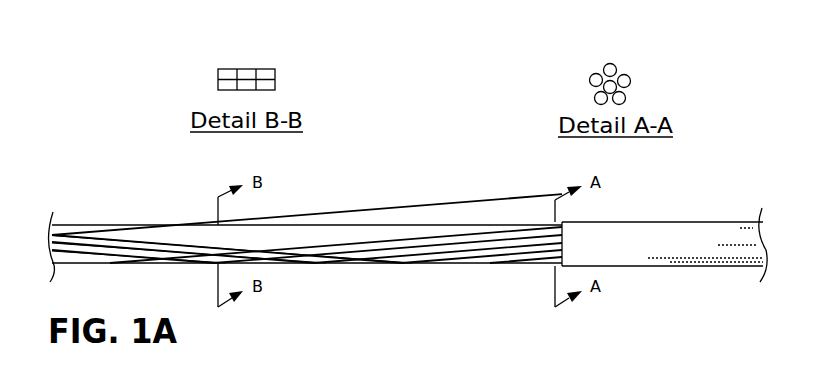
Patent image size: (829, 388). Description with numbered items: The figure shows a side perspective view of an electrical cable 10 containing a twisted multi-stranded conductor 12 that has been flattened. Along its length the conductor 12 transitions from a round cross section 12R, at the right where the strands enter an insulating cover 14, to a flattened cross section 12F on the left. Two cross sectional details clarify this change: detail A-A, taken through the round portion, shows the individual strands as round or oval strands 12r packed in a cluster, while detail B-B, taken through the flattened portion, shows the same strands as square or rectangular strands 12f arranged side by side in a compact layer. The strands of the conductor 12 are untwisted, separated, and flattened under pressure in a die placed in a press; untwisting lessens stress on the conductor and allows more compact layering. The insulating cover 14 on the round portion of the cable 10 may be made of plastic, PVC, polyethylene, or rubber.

The electrical cable 10 is at (110, 188).
The twisted multi-stranded conductor 12 is at (385, 225).
The flattened cross section 12F is at (288, 225).
The round cross section 12R is at (562, 222).
The square or rectangular strands 12f is at (218, 70).
The round or oval strands 12r is at (591, 78).
The insulating cover 14 is at (695, 222).